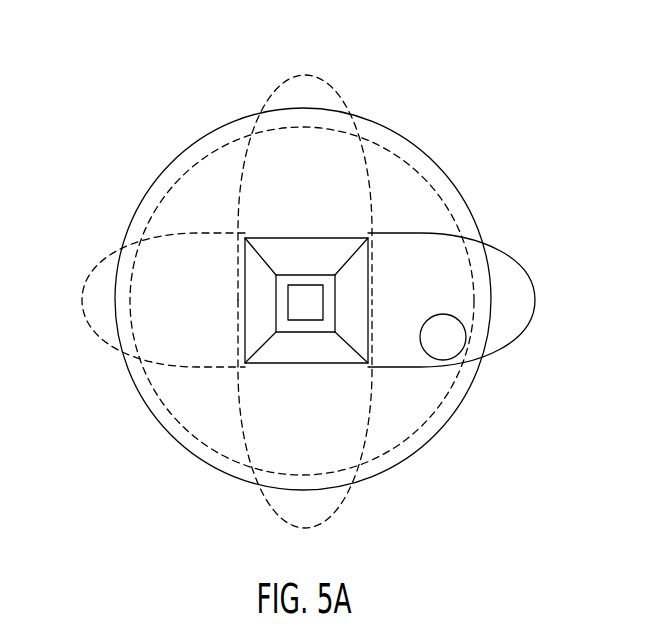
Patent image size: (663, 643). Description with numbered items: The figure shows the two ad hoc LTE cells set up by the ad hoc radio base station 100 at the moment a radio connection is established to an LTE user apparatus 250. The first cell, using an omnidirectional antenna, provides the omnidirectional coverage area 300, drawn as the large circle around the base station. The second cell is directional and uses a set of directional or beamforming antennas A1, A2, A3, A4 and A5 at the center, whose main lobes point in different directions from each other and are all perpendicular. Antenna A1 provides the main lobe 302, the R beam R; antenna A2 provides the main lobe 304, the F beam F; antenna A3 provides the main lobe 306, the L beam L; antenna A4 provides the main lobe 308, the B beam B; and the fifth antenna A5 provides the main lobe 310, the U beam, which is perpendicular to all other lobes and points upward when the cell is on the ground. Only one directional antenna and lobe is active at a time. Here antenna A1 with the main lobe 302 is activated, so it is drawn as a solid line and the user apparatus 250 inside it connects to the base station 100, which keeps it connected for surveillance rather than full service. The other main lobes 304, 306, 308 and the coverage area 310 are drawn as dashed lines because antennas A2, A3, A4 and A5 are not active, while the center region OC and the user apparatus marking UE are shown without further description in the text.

The ad hoc radio base station 100 is at (217, 375).
The LTE user apparatus 250 is at (459, 355).
The omnidirectional coverage area 300 is at (428, 155).
The main lobe 302 is at (515, 262).
The main lobe 304 is at (325, 80).
The main lobe 306 is at (117, 250).
The main lobe 308 is at (355, 497).
The main lobe 310 is at (426, 428).
The directional or beamforming antenna A1 is at (353, 302).
The directional or beamforming antenna A2 is at (307, 257).
The directional or beamforming antenna A3 is at (260, 302).
The directional or beamforming antenna A4 is at (307, 350).
The fifth directional antenna A5 is at (277, 312).
The overlap center region OC is at (305, 302).
The user equipment UE is at (443, 337).
The F-beam F is at (303, 165).
The B-beam B is at (303, 437).
The L-beam L is at (170, 301).
The R-beam R is at (428, 301).